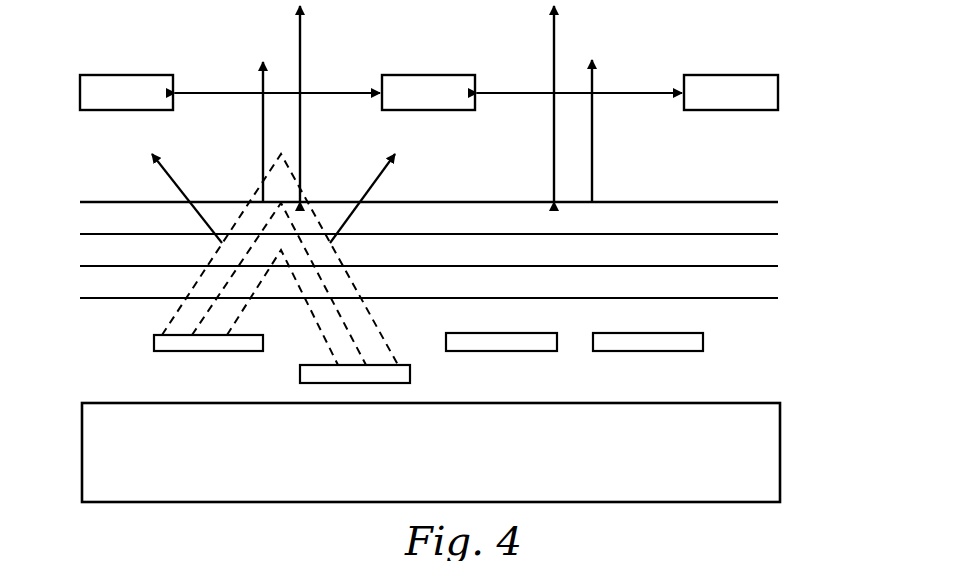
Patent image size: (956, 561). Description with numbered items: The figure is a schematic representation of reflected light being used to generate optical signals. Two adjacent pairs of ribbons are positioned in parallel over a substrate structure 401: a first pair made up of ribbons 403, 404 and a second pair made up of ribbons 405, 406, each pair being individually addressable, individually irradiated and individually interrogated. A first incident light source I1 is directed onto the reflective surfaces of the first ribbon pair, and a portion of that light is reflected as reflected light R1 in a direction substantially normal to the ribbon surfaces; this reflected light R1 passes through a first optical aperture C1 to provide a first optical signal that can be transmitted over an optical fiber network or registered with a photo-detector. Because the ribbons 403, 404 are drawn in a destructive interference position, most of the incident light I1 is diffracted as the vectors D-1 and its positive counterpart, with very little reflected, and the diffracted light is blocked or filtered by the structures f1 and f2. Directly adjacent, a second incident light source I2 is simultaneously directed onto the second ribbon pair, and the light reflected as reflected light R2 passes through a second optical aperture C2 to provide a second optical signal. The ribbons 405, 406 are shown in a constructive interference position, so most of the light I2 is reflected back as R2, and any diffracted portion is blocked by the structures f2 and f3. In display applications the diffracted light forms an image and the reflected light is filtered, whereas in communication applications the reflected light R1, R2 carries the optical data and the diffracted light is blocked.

The substrate structure 401 is at (780, 442).
The first ribbon 403 is at (208, 352).
The second ribbon 404 is at (410, 372).
The third ribbon 405 is at (487, 332).
The fourth ribbon 406 is at (634, 332).
The first blocking structure f1 is at (126, 92).
The second blocking structure f2 is at (428, 92).
The third blocking structure f3 is at (731, 92).
The first optical aperture C1 is at (330, 95).
The second optical aperture C2 is at (640, 96).
The first reflected light R1 is at (263, 122).
The second reflected light R2 is at (592, 108).
The first incident light source I1 is at (300, 38).
The second incident light source I2 is at (554, 32).
The minus-first-order diffracted light D-1 is at (167, 189).